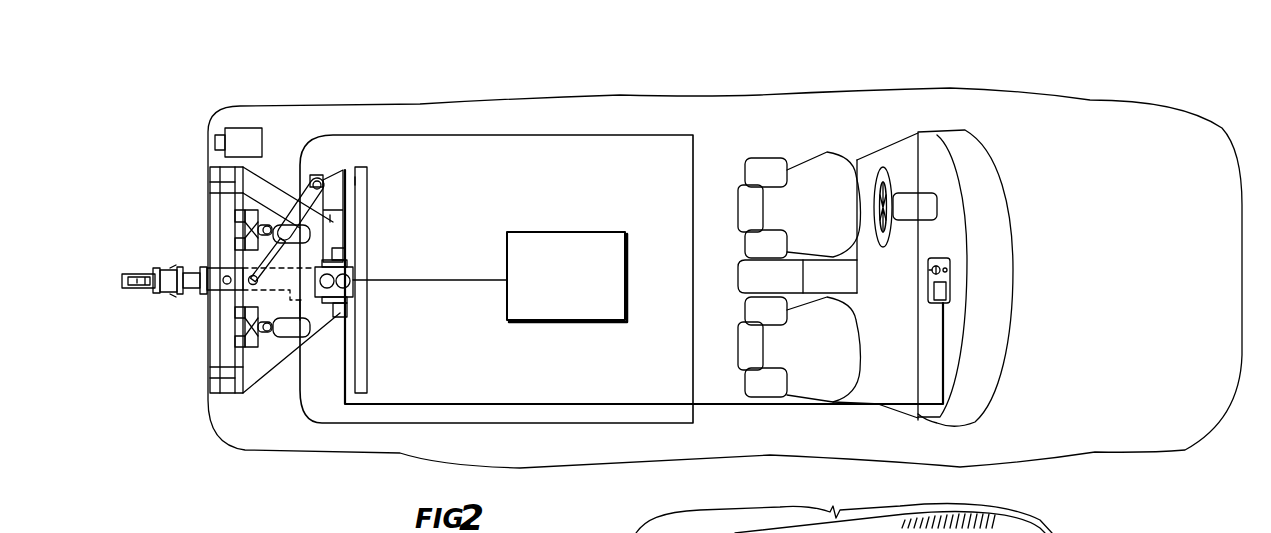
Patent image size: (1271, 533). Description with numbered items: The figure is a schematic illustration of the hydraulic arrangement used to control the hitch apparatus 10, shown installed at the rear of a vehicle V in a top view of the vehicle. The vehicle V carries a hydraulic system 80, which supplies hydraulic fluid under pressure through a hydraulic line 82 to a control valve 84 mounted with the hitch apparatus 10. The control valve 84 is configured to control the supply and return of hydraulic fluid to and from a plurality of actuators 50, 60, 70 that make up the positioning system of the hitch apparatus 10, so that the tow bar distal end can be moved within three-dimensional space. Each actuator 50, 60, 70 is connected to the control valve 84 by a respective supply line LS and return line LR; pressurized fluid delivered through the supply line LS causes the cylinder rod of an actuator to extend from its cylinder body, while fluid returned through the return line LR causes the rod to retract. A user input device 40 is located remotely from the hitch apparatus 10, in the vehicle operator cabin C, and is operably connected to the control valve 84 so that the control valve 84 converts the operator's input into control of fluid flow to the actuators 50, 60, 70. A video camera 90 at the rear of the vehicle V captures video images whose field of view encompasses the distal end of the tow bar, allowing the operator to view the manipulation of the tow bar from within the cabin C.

The hitch apparatus 10 is at (178, 223).
The user input device 40 is at (950, 276).
The actuator 50 is at (268, 217).
The actuator 60 is at (292, 213).
The actuator 70 is at (300, 307).
The hydraulic system 80 is at (557, 232).
The hydraulic line 82 is at (420, 280).
The control valve 84 is at (352, 290).
The video camera 90 is at (252, 128).
The vehicle operator cabin C is at (800, 147).
The vehicle V is at (922, 71).
The supply line LS is at (355, 177).
The return line LR is at (330, 215).